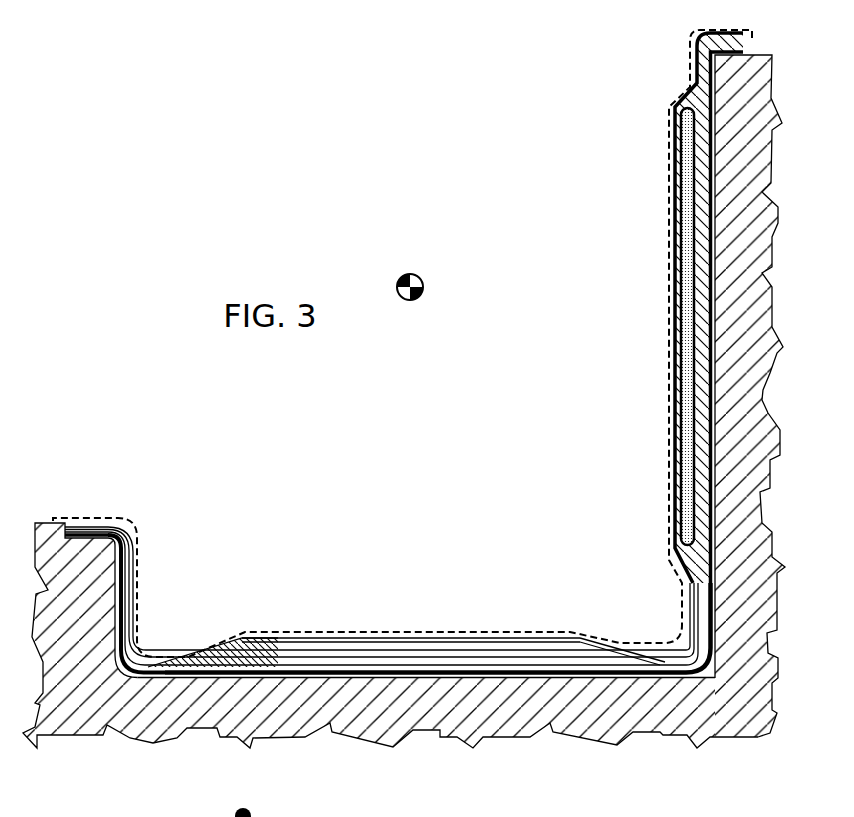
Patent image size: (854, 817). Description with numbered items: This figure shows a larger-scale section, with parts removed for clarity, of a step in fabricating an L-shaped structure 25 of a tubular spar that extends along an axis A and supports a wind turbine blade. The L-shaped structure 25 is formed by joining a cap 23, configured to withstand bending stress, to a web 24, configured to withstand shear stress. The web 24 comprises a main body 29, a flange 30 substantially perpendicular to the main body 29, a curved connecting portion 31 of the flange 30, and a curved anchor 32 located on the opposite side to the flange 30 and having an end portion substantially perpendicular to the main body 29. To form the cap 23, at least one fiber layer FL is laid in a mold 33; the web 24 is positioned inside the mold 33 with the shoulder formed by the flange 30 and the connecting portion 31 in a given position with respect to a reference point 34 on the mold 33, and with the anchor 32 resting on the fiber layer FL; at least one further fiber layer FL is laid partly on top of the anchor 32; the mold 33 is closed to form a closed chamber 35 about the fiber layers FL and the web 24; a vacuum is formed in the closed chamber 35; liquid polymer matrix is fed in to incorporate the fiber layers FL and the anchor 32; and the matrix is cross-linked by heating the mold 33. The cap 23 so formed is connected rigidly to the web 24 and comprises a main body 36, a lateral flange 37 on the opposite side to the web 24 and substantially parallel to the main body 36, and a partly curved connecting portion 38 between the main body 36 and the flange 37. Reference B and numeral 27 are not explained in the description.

The cap 23 is at (413, 610).
The web 24 is at (640, 272).
The L-shaped structure 25 is at (583, 460).
The foam filler 27 is at (686, 330).
The main body 29 is at (697, 378).
The flange 30 is at (733, 40).
The curved connecting portion 31 is at (697, 44).
The curved anchor 32 is at (700, 670).
The mold 33 is at (693, 690).
The reference point 34 is at (732, 70).
The closed chamber 35 is at (620, 645).
The main body 36 is at (397, 657).
The lateral flange 37 is at (87, 525).
The partly curved connecting portion 38 is at (123, 600).
The axis A is at (420, 300).
The region B is at (535, 632).
The fiber layer FL is at (340, 651).